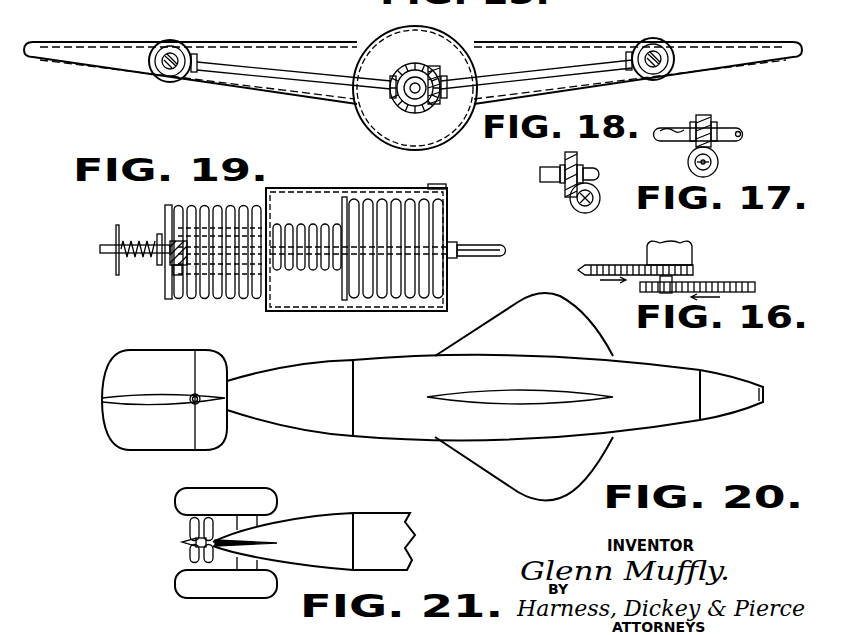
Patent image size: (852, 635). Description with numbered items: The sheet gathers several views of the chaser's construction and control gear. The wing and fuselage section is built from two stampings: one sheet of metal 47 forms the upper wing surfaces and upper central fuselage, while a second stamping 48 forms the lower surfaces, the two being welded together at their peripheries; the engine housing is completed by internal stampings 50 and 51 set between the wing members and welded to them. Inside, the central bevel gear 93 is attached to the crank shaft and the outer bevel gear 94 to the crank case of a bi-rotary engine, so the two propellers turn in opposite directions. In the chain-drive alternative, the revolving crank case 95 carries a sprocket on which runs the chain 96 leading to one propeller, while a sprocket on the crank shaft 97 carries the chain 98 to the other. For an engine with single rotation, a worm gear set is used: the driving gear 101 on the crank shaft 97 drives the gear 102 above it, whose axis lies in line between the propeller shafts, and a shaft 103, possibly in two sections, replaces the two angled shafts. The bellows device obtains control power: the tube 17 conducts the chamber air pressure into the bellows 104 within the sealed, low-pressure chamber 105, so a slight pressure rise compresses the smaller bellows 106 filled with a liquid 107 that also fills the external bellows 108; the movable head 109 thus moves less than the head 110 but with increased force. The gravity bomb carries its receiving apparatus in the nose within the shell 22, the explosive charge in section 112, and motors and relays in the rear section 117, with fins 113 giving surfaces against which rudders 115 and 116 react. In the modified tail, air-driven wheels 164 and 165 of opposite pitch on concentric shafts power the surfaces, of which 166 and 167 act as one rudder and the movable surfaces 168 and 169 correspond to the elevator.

In FIG. 19, the tube 17 is at (473, 248).
In FIG. 20, the shell 22 is at (714, 375).
In FIG. 15, the upper stamping 47 is at (589, 41).
In FIG. 15, the lower stamping 48 is at (594, 87).
In FIG. 15, the internal stamping 50 is at (357, 52).
In FIG. 15, the internal stamping 51 is at (478, 55).
In FIG. 15, the central bevel gear 93 is at (420, 66).
In FIG. 15, the outer bevel gear 94 is at (426, 107).
In FIG. 16, the revolving crank case 95 is at (690, 252).
In FIG. 16, the chain 96 is at (623, 265).
In FIG. 15, the crank shaft 97 is at (403, 108).
In FIG. 18, the crank shaft 97 is at (688, 162).
In FIG. 17, the crank shaft 97 is at (596, 200).
In FIG. 16, the crank shaft 97 is at (659, 292).
In FIG. 16, the chain 98 is at (712, 283).
In FIG. 18, the driving gear 101 is at (719, 160).
In FIG. 18, the gear 102 is at (713, 118).
In FIG. 18, the shaft 103 is at (745, 134).
In FIG. 17, the shaft 103 is at (548, 172).
In FIG. 19, the bellows 104 is at (377, 217).
In FIG. 19, the sealed chamber 105 is at (328, 216).
In FIG. 19, the smaller bellows 106 is at (284, 271).
In FIG. 19, the liquid 107 is at (175, 264).
In FIG. 19, the external bellows 108 is at (201, 207).
In FIG. 19, the movable head 109 is at (169, 223).
In FIG. 19, the head 110 is at (349, 255).
In FIG. 20, the section 112 is at (676, 410).
In FIG. 21, the section 112 is at (396, 552).
In FIG. 20, the fins or wings 113 is at (562, 339).
In FIG. 20, the rudder 115 is at (171, 380).
In FIG. 20, the rudder 116 is at (182, 407).
In FIG. 20, the rear section 117 is at (303, 407).
In FIG. 21, the rear section 117 is at (331, 552).
In FIG. 21, the air-driven wheel 164 is at (188, 525).
In FIG. 21, the air-driven wheel 165 is at (188, 555).
In FIG. 21, the rudder surface 166 is at (243, 512).
In FIG. 21, the rudder surface 167 is at (243, 593).
In FIG. 21, the movable surface 168 is at (252, 537).
In FIG. 21, the movable surface 169 is at (182, 542).